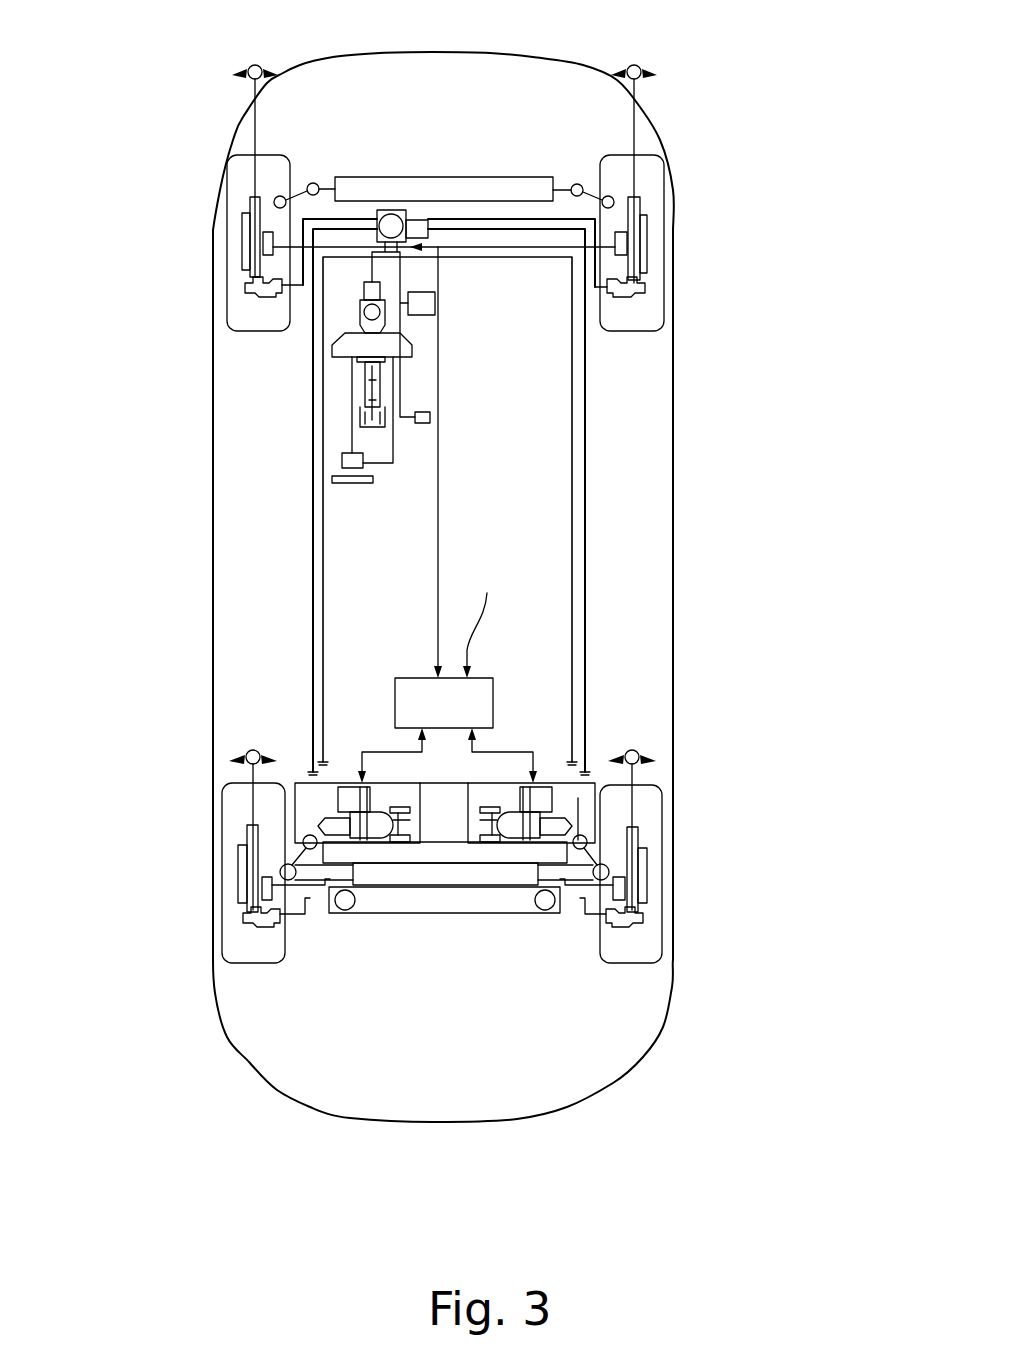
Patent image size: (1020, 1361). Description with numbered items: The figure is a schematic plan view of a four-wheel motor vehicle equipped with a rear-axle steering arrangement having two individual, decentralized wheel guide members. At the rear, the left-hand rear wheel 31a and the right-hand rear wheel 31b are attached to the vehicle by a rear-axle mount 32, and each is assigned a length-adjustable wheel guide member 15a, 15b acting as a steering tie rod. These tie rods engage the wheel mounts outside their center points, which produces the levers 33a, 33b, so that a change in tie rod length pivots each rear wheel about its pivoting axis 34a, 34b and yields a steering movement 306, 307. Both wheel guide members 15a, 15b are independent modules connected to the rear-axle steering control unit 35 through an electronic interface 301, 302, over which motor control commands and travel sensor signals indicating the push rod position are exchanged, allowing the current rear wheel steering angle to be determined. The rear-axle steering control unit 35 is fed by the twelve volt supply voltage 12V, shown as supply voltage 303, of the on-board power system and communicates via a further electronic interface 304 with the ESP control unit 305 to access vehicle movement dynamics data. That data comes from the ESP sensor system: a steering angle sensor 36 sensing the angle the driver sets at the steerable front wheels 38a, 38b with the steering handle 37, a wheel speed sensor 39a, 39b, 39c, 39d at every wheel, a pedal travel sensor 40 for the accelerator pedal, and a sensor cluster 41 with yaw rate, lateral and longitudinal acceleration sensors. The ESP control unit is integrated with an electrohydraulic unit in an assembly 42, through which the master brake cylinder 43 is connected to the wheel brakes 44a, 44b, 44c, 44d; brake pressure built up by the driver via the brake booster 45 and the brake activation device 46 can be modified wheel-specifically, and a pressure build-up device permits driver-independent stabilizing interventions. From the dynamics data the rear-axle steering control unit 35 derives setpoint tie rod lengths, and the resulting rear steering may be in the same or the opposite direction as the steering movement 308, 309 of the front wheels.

The steerable front wheel 38a is at (238, 183).
The steerable front wheel 38b is at (652, 185).
The wheel speed sensor 39a is at (258, 238).
The wheel speed sensor 39b is at (633, 238).
The wheel speed sensor 39c is at (643, 892).
The wheel speed sensor 39d is at (242, 893).
The wheel brake 44a is at (243, 289).
The wheel brake 44b is at (648, 288).
The wheel brake 44c is at (643, 918).
The wheel brake 44d is at (240, 918).
The assembly 42 is at (398, 210).
The master brake cylinder 43 is at (366, 315).
The brake booster 45 is at (405, 344).
The brake activation device 46 is at (364, 406).
The steering angle sensor 36 is at (345, 463).
The steering handle 37 is at (345, 483).
The sensor cluster 41 is at (430, 303).
The pedal travel sensor 40 is at (428, 418).
The rear-axle steering control unit 35 is at (420, 678).
The supply voltage 12V is at (498, 621).
The wheel guide member 15a is at (340, 800).
The wheel guide member 15b is at (566, 800).
The rear-axle mount 32 is at (463, 898).
The left-hand rear wheel 31a is at (235, 817).
The right-hand rear wheel 31b is at (650, 818).
The lever 33a is at (248, 848).
The lever 33b is at (630, 848).
The pivoting axis 34a is at (245, 867).
The pivoting axis 34b is at (635, 867).
The electronic interface 301 is at (367, 758).
The electronic interface 302 is at (475, 770).
The supply voltage 303 is at (498, 565).
The electronic interface 304 is at (438, 498).
The ESP control unit 305 is at (415, 352).
The steering movement 306 is at (249, 752).
The steering movement 307 is at (638, 752).
The steering movement 308 is at (252, 66).
The steering movement 309 is at (642, 70).